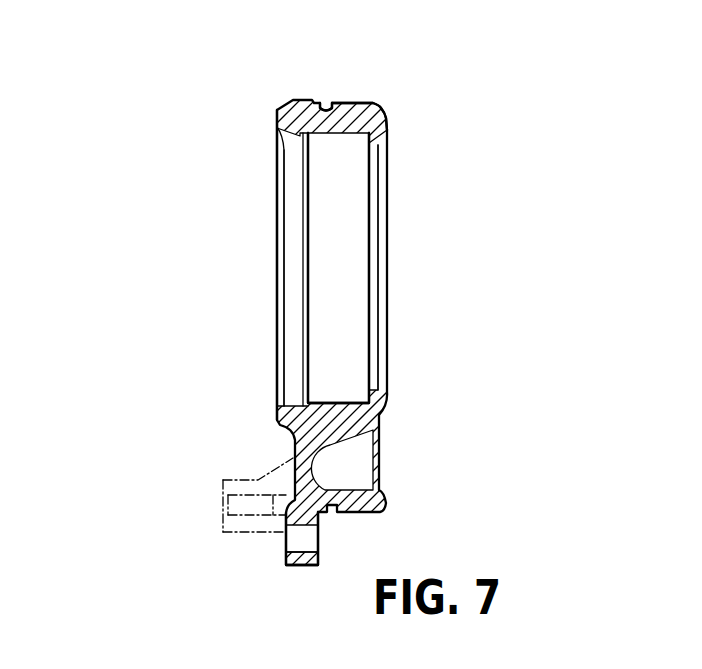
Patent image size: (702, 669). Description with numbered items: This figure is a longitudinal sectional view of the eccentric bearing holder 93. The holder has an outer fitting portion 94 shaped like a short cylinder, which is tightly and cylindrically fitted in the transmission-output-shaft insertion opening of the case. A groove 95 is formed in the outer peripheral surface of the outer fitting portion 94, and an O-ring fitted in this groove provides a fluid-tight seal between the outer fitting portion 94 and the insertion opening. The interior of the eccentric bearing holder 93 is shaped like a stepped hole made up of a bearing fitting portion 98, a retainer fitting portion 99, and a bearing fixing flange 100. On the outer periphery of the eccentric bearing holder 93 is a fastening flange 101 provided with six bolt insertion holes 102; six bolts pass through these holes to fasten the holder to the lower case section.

The eccentric bearing holder 93 is at (230, 207).
The outer fitting portion 94 is at (357, 100).
The groove 95 is at (329, 100).
The bearing fitting portion 98 is at (329, 136).
The retainer fitting portion 99 is at (277, 153).
The bearing fixing flange 100 is at (370, 146).
The fastening flange 101 is at (298, 567).
The bolt insertion holes 102 is at (292, 540).